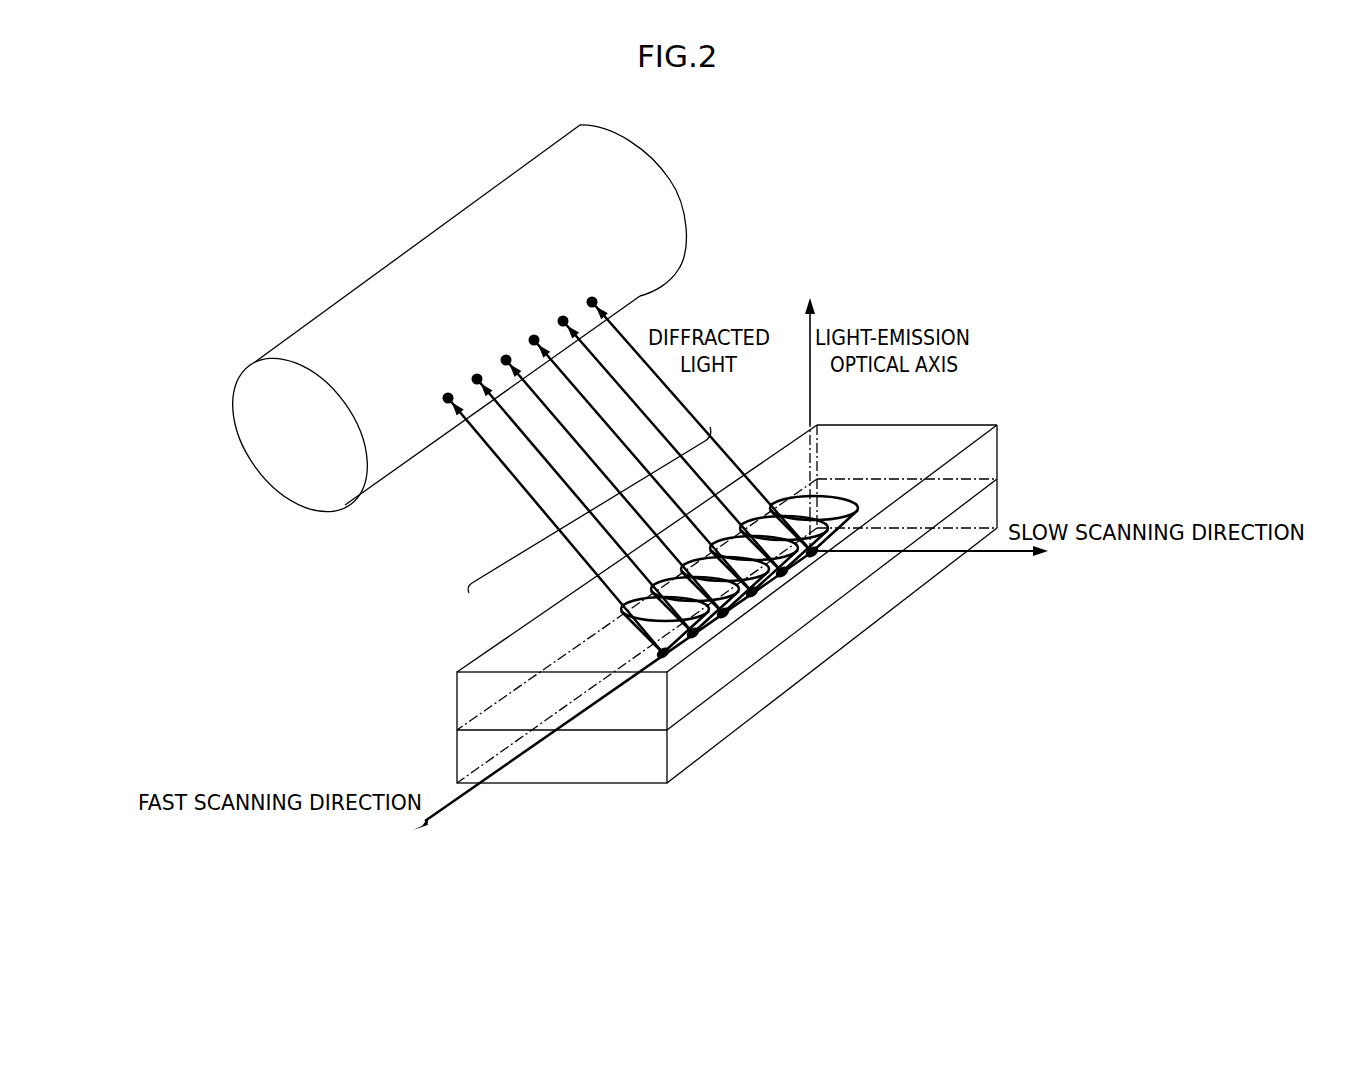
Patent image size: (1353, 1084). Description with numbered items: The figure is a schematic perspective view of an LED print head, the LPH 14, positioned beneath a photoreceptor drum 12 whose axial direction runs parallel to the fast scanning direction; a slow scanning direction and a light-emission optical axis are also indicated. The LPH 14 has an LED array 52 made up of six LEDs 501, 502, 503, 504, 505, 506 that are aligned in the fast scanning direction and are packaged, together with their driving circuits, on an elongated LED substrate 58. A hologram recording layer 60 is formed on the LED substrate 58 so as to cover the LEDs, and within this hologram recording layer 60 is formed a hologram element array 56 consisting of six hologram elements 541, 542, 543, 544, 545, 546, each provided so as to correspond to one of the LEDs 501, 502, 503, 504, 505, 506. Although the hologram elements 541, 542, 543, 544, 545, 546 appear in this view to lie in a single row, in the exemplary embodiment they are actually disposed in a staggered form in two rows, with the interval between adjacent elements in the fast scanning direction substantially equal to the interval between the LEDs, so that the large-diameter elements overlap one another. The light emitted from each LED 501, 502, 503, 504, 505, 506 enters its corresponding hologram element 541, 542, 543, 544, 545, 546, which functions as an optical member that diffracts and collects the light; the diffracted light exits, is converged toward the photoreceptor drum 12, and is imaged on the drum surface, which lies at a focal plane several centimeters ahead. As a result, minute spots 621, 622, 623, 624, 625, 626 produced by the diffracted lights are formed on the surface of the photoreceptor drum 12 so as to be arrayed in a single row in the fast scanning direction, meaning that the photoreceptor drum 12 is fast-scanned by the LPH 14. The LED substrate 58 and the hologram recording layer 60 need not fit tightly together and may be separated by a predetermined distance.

The photoreceptor drum 12 is at (648, 184).
The LED print head 14 is at (941, 431).
The LED 501 is at (816, 554).
The LED 502 is at (786, 574).
The LED 503 is at (756, 594).
The LED 504 is at (727, 615).
The LED 505 is at (697, 635).
The LED 506 is at (667, 655).
The LED array 52 is at (1007, 602).
The hologram element 541 is at (768, 503).
The hologram element 542 is at (738, 523).
The hologram element 543 is at (708, 543).
The hologram element 544 is at (680, 562).
The hologram element 545 is at (655, 582).
The hologram element 546 is at (630, 602).
The hologram element array 56 is at (548, 537).
The LED substrate 58 is at (988, 502).
The hologram recording layer 60 is at (988, 452).
The spot 621 is at (592, 298).
The spot 622 is at (561, 317).
The spot 623 is at (532, 336).
The spot 624 is at (504, 356).
The spot 625 is at (475, 376).
The spot 626 is at (446, 396).